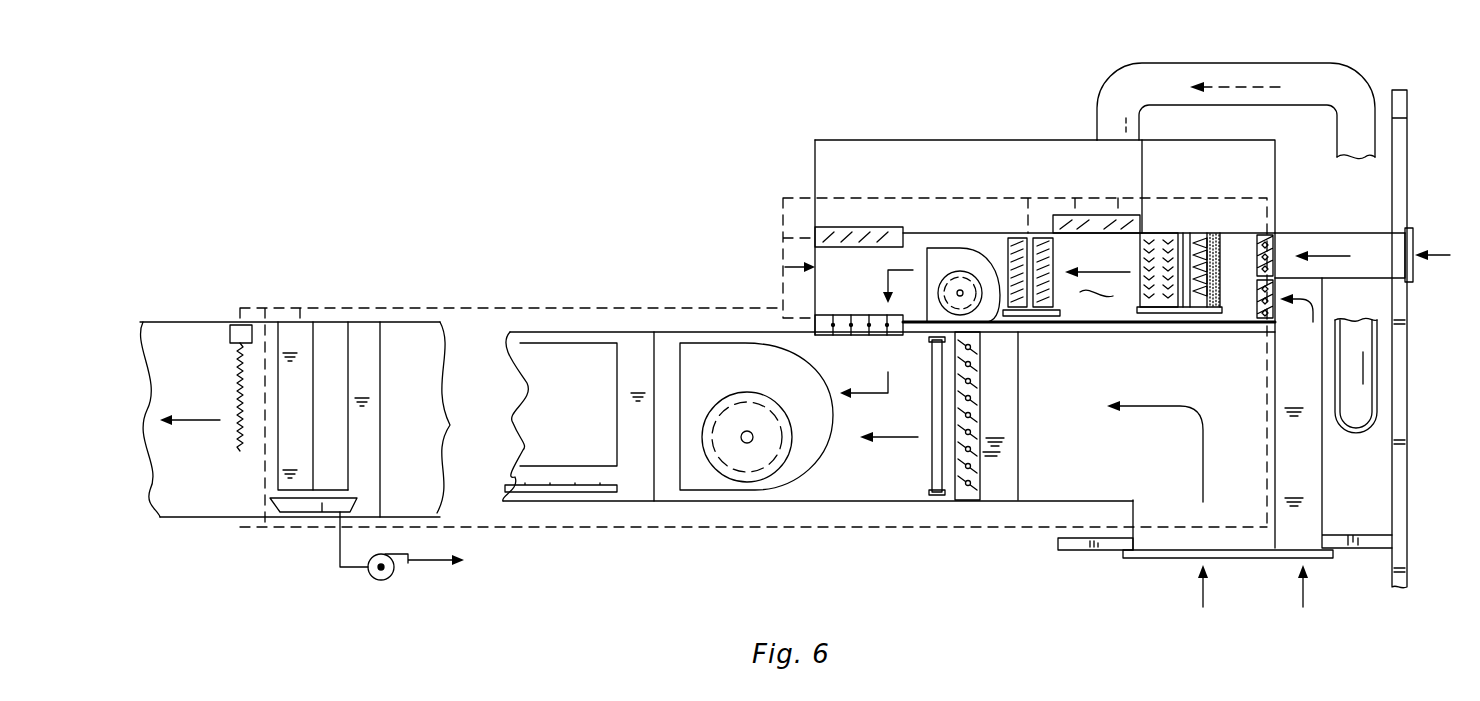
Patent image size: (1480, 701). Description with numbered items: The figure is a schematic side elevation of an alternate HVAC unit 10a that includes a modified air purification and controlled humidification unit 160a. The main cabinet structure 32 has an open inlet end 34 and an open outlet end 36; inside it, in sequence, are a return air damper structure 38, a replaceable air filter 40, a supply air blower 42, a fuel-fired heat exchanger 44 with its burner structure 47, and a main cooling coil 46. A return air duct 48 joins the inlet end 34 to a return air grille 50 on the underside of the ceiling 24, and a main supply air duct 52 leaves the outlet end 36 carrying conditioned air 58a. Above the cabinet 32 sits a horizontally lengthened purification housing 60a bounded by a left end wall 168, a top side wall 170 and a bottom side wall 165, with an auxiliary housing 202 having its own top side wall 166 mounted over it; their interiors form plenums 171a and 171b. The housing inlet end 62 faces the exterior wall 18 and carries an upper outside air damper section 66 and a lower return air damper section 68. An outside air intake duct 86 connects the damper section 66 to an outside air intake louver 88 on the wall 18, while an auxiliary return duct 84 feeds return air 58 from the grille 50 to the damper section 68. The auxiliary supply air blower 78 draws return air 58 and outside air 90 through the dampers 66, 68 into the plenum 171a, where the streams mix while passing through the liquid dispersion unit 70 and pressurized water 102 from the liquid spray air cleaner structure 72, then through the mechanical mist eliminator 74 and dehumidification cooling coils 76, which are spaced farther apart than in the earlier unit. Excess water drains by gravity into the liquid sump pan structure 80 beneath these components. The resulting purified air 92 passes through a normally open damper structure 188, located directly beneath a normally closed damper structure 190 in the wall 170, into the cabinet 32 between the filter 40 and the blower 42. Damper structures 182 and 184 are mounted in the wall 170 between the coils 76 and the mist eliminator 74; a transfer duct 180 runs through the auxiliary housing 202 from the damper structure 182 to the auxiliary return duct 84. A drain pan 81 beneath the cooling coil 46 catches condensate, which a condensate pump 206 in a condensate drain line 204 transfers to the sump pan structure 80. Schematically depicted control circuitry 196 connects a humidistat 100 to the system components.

The HVAC unit 10a is at (666, 232).
The exterior wall 18 is at (1407, 460).
The ceiling 24 is at (1073, 551).
The cabinet structure 32 is at (655, 332).
The inlet end 34 is at (1010, 448).
The outlet end 36 is at (278, 490).
The return air damper structure 38 is at (1005, 482).
The air filter 40 is at (934, 497).
The supply air blower 42 is at (822, 470).
The heat exchanger 44 is at (520, 334).
The cooling coil 46 is at (328, 322).
The burner structure 47 is at (580, 492).
The return air duct 48 is at (1132, 517).
The return air grille 50 is at (1155, 559).
The main supply air duct 52 is at (195, 322).
The return air 58 is at (1257, 85).
The conditioned air 58a is at (200, 422).
The modified purification system housing 60a is at (785, 267).
The inlet end 62 is at (1316, 233).
The outside air damper section 66 is at (1268, 250).
The return air damper section 68 is at (1277, 322).
The liquid dispersion unit 70 is at (1224, 244).
The liquid spray air cleaner structure 72 is at (1195, 233).
The mechanical mist eliminator 74 is at (1155, 233).
The dehumidification cooling coils 76 is at (1024, 238).
The auxiliary supply air blower 78 is at (934, 254).
The liquid sump pan structure 80 is at (1183, 314).
The drain pan 81 is at (310, 512).
The auxiliary return duct 84 is at (1322, 508).
The outside air intake duct 86 is at (1392, 233).
The outside air intake louver 88 is at (1414, 250).
The outside air 90 is at (1330, 263).
The purified air 92 is at (888, 272).
The humidistat 100 is at (232, 338).
The pressurized water 102 is at (1213, 233).
The air purification and controlled humidification unit 160a is at (866, 114).
The bottom side wall 165 is at (1065, 325).
The top side wall 166 is at (1040, 147).
The left end wall 168 is at (783, 305).
The top side wall 170 is at (960, 246).
The interior 171a is at (1100, 294).
The interior 171b is at (1050, 148).
The transfer duct 180 is at (1147, 132).
The damper structure 182 is at (1139, 214).
The damper structure 184 is at (1090, 215).
The damper structure 188 is at (865, 335).
The damper structure 190 is at (876, 227).
The control circuitry 196 is at (588, 308).
The auxiliary housing 202 is at (925, 130).
The condensate drain line 204 is at (348, 568).
The condensate pump 206 is at (396, 579).